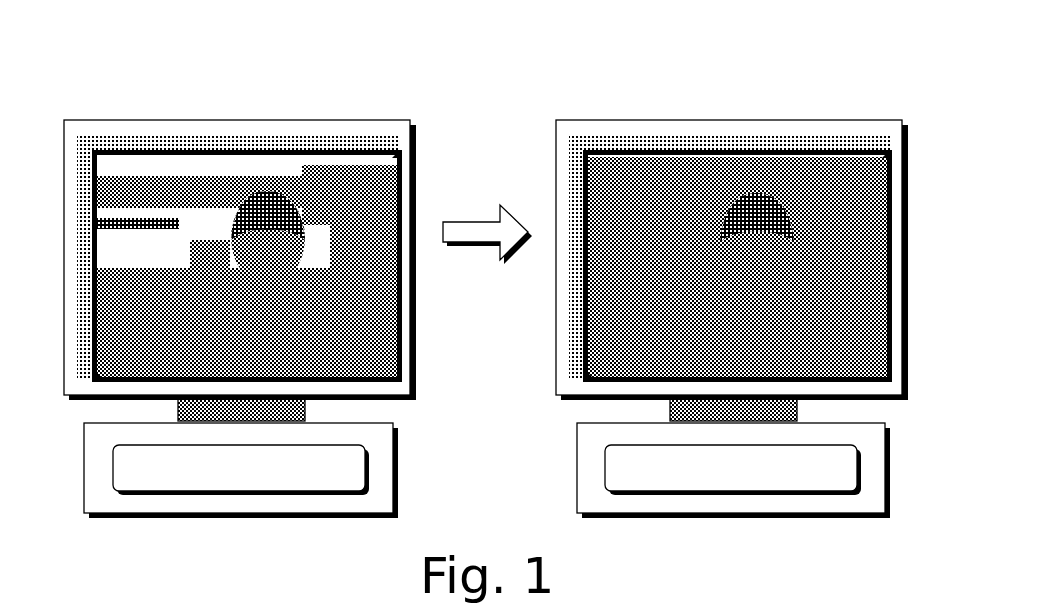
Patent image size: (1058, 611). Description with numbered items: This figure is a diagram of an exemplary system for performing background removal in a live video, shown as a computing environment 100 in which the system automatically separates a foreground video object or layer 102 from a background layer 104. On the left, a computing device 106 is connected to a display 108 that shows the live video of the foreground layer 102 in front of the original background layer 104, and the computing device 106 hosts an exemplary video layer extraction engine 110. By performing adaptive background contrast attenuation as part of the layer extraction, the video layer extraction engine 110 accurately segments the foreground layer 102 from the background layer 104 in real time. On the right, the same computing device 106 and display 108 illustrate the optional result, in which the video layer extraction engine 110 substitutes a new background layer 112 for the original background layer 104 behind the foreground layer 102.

The computing environment 100 is at (156, 71).
The foreground video object or layer 102 is at (330, 336).
The background layer 104 is at (348, 197).
The computing device 106 is at (399, 452).
The display 108 is at (417, 368).
The video layer extraction engine 110 is at (487, 470).
The new background layer 112 is at (638, 196).